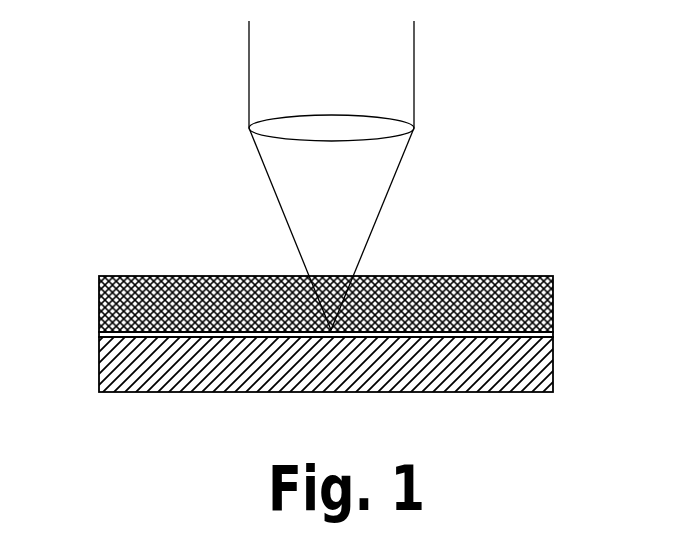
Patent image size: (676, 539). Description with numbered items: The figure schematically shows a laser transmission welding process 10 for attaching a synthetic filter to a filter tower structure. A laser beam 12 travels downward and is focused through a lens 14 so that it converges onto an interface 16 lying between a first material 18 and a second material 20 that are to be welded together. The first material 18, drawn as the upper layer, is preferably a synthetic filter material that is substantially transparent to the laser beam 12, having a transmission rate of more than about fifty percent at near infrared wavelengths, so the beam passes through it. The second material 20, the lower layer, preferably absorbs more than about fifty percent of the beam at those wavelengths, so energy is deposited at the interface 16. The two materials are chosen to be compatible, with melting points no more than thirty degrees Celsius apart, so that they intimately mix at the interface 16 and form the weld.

The laser transmission welding process 10 is at (324, 205).
The laser beam 12 is at (294, 214).
The lens 14 is at (393, 132).
The interface 16 is at (450, 317).
The first material 18 is at (538, 297).
The second material 20 is at (549, 361).